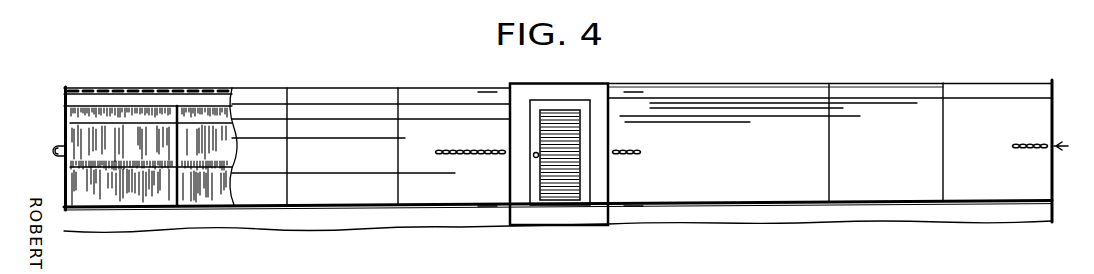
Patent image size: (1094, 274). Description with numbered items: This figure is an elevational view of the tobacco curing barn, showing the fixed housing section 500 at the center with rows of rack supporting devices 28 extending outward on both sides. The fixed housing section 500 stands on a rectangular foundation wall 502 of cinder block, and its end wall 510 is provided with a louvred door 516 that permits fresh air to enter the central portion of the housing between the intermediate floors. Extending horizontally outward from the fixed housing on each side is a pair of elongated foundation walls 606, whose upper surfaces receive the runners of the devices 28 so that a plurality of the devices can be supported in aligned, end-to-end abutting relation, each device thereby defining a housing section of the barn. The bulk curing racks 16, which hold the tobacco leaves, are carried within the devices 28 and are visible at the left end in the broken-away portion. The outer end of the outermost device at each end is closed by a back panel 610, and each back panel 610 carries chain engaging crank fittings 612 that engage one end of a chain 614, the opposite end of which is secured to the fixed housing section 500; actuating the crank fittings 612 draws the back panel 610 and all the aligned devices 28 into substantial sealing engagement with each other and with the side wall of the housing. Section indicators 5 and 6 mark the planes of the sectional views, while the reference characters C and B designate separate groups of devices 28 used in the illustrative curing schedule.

The bulk curing rack 16 is at (122, 114).
The rack supporting device 28 is at (417, 85).
The section line 5- 5 is at (487, 106).
The section line 6- 6 is at (487, 221).
The fixed housing section 500 is at (539, 229).
The foundation wall 502 is at (567, 218).
The end wall 510 is at (597, 130).
The louvred door 516 is at (572, 164).
The foundation wall 606 is at (349, 215).
The back panel 610 is at (64, 122).
The chain engaging crank fitting 612 is at (50, 152).
The chain 614 is at (473, 150).
The group of devices C is at (268, 216).
The group of devices B is at (934, 210).